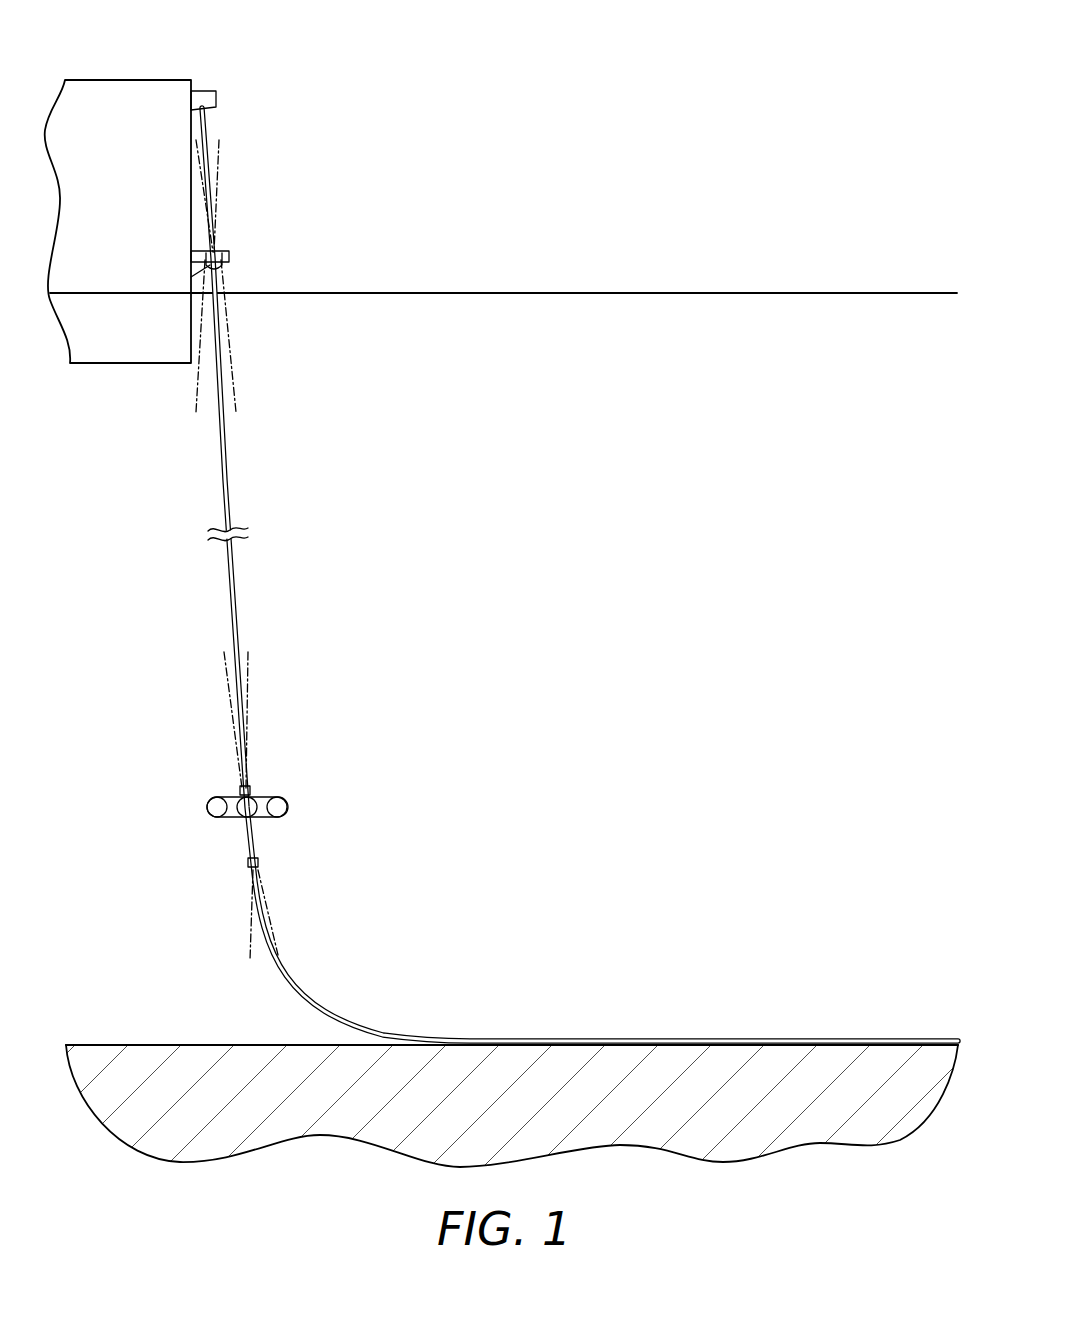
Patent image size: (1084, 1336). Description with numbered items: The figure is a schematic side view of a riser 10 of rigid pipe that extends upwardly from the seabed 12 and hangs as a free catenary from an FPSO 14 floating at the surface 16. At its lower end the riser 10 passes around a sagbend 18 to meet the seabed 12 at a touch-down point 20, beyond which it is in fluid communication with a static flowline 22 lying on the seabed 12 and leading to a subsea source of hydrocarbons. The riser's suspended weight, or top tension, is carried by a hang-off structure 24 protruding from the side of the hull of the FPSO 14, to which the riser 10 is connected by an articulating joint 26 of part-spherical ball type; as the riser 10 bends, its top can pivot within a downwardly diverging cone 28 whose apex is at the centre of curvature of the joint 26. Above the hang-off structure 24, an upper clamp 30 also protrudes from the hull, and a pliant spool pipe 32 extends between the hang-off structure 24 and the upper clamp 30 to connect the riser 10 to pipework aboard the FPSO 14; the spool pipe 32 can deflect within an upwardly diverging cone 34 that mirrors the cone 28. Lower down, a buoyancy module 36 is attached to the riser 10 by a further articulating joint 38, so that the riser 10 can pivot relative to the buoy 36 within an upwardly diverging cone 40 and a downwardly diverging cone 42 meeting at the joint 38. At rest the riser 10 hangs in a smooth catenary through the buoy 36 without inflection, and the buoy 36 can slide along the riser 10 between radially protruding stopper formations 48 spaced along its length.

The riser 10 is at (318, 582).
The seabed 12 is at (150, 1044).
The FPSO 14 is at (104, 80).
The surface 16 is at (685, 293).
The sagbend 18 is at (313, 1006).
The touch-down point 20 is at (452, 1040).
The static flowline 22 is at (683, 1040).
The hang-off structure 24 is at (191, 262).
The articulating joint 26 is at (229, 257).
The downwardly diverging cone 28 is at (235, 393).
The upper clamp 30 is at (218, 96).
The pliant spool pipe 32 is at (214, 214).
The upwardly diverging cone 34 is at (218, 143).
The buoyancy module 36 is at (208, 803).
The articulating joint 38 is at (256, 802).
The upwardly diverging cone 40 is at (225, 678).
The downwardly diverging cone 42 is at (277, 934).
The stopper formations 48 is at (240, 788).